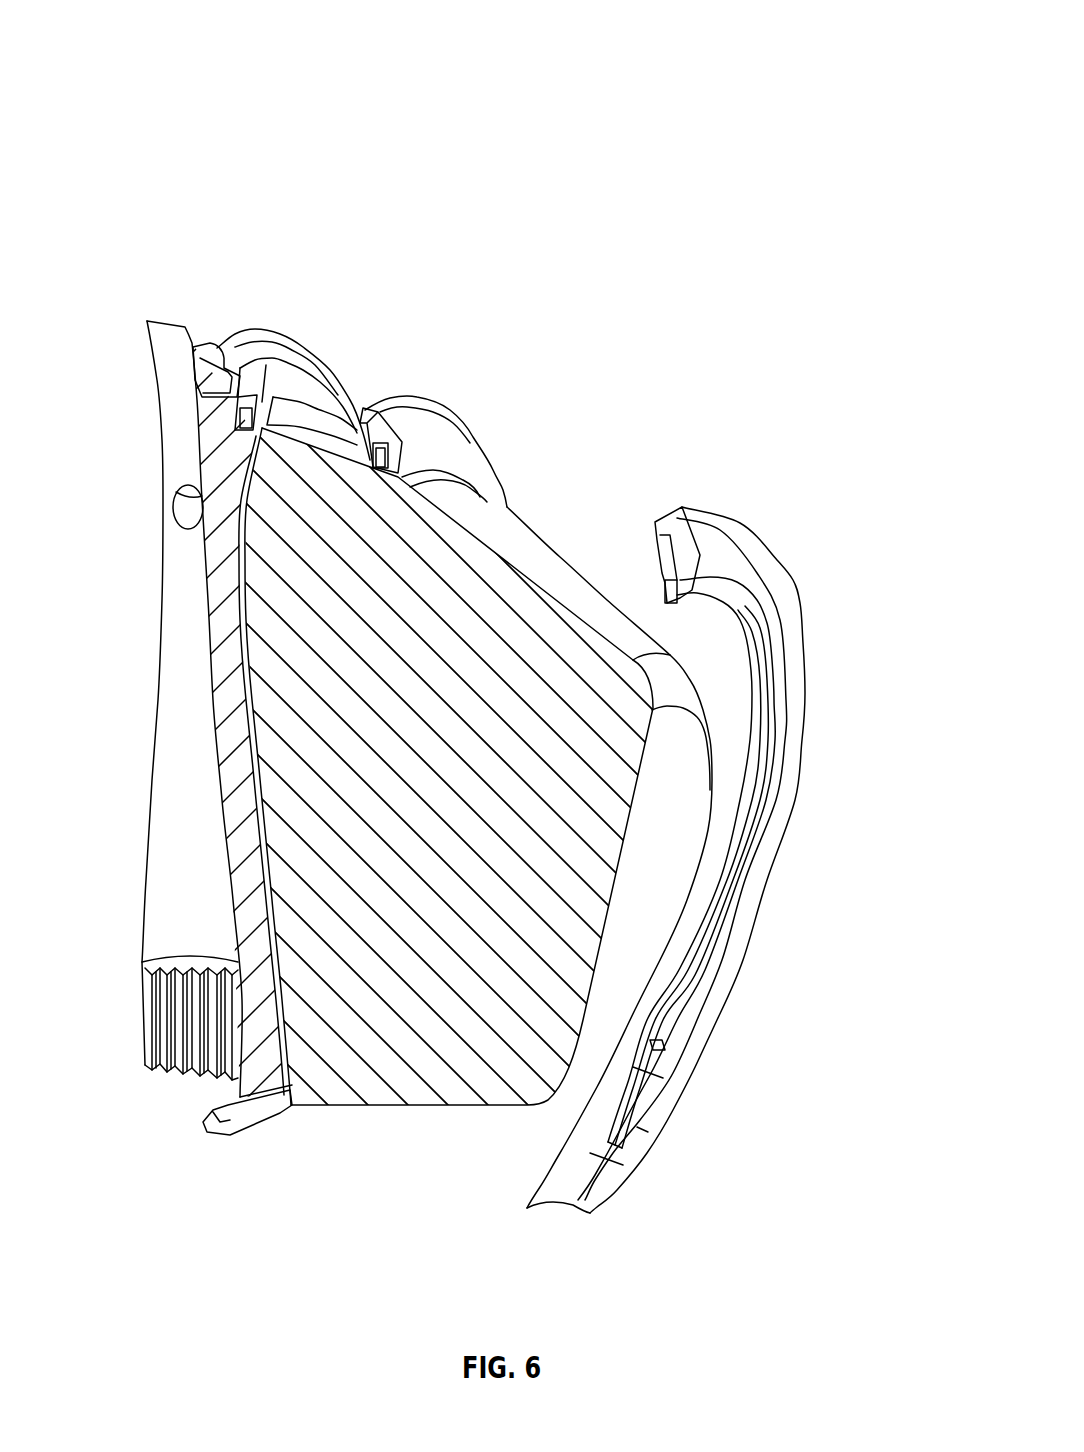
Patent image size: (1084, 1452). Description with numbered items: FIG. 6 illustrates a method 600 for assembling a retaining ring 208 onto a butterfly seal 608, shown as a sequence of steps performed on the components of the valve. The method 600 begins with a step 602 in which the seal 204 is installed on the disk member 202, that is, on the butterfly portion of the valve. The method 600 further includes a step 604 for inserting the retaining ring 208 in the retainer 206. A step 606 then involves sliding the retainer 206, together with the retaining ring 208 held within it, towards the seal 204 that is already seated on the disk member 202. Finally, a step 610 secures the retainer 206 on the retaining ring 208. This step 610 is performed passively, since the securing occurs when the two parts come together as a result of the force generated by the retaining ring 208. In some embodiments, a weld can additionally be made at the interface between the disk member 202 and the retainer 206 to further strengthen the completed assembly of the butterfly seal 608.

The method 600 is at (443, 66).
The step 602 is at (232, 283).
The step 610 is at (320, 298).
The step 606 is at (470, 300).
The step 604 is at (757, 308).
The seal 204 is at (220, 363).
The retainer 206 is at (317, 384).
The retaining ring 208 is at (378, 462).
The disk member 202 is at (222, 557).
The butterfly seal 608 is at (609, 857).